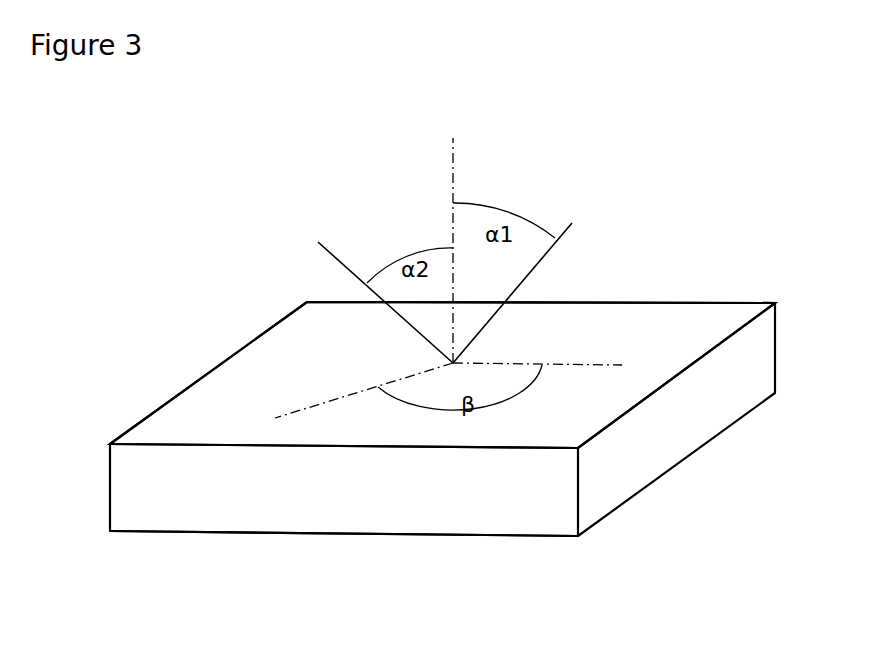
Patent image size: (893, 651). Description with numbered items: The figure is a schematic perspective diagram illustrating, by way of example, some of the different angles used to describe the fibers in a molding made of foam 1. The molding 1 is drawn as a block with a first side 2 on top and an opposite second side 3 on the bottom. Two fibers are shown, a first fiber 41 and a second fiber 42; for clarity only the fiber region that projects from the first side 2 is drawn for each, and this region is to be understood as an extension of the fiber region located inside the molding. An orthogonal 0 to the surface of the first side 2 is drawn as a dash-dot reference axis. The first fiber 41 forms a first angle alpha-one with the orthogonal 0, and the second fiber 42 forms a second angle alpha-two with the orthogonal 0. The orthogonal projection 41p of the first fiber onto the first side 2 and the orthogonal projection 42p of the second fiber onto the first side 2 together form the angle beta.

The orthogonal 0 is at (453, 234).
The molding made of foam 1 is at (724, 279).
The first side of the molding 2 is at (222, 388).
The second side of the molding 3 is at (525, 537).
The first fiber 41 is at (526, 279).
The second fiber 42 is at (377, 288).
The orthogonal projection of the first fiber onto the first side 41p is at (562, 367).
The orthogonal projection of the second fiber onto the first side 42p is at (340, 396).